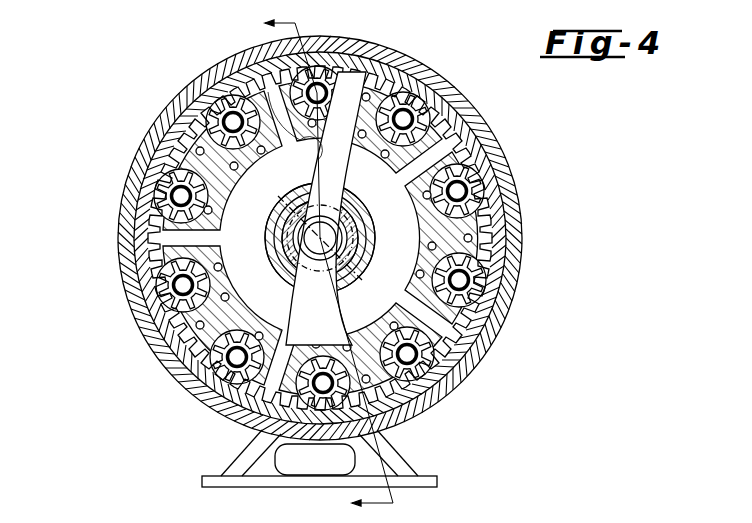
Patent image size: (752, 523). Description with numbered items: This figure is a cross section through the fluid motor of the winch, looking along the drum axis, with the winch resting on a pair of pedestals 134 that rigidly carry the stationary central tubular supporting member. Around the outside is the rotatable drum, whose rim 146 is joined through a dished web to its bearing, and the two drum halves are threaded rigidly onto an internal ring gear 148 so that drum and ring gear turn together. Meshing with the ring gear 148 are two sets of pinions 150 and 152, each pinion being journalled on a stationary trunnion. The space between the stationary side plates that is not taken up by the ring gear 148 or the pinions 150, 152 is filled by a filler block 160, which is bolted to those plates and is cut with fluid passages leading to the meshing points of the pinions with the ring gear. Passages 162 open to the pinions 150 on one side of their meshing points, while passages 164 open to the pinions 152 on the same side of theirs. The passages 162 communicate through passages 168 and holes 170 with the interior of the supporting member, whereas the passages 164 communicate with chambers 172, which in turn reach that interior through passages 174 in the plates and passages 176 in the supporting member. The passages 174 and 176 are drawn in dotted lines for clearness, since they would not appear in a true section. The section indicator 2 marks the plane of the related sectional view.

The section line 2- 2 is at (319, 263).
The pedestals 134 is at (414, 458).
The rim 146 is at (508, 183).
The internal ring gear 148 is at (250, 62).
The pinions 150 is at (392, 58).
The pinions 152 is at (227, 130).
The filler block 160 is at (290, 210).
The passages 162 is at (430, 80).
The passages 164 is at (227, 132).
The passages 168 is at (300, 272).
The holes 170 is at (352, 206).
The chambers 172 is at (334, 186).
The passages 174 is at (300, 186).
The passages 176 is at (298, 200).